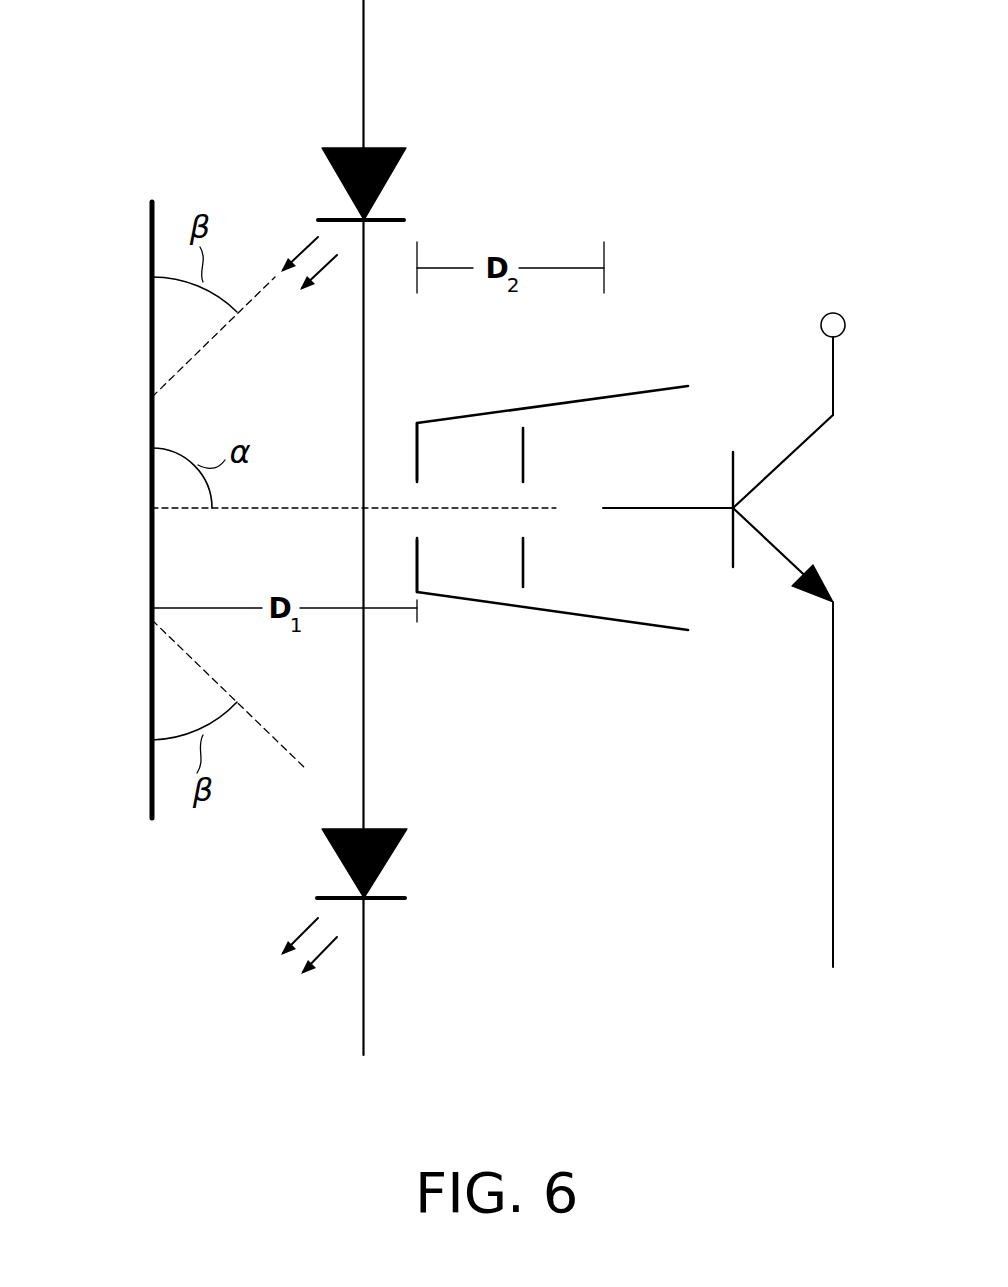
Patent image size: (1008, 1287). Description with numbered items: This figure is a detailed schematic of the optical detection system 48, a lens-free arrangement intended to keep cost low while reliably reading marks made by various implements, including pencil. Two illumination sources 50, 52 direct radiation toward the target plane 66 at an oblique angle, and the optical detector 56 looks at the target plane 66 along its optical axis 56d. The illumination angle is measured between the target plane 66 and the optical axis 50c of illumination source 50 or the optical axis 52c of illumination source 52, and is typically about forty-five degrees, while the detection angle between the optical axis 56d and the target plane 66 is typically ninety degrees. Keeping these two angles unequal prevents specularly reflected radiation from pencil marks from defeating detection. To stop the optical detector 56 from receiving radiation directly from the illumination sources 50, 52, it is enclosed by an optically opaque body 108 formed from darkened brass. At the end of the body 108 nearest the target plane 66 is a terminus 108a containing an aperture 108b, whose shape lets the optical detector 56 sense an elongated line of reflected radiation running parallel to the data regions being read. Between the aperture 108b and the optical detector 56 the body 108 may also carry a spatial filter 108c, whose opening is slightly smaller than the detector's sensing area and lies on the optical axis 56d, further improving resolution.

The optical detection system 48 is at (655, 158).
The illumination source 50 is at (390, 183).
The optical axis of illumination source 50c is at (203, 348).
The illumination source 52 is at (388, 858).
The optical axis of illumination source 52c is at (258, 722).
The optical detector 56 is at (858, 503).
The optical axis of optical detector 56d is at (568, 508).
The target plane 66 is at (150, 558).
The optically opaque body 108 is at (491, 531).
The terminus 108a is at (417, 560).
The aperture 108b is at (410, 493).
The spatial filter 108c is at (523, 455).